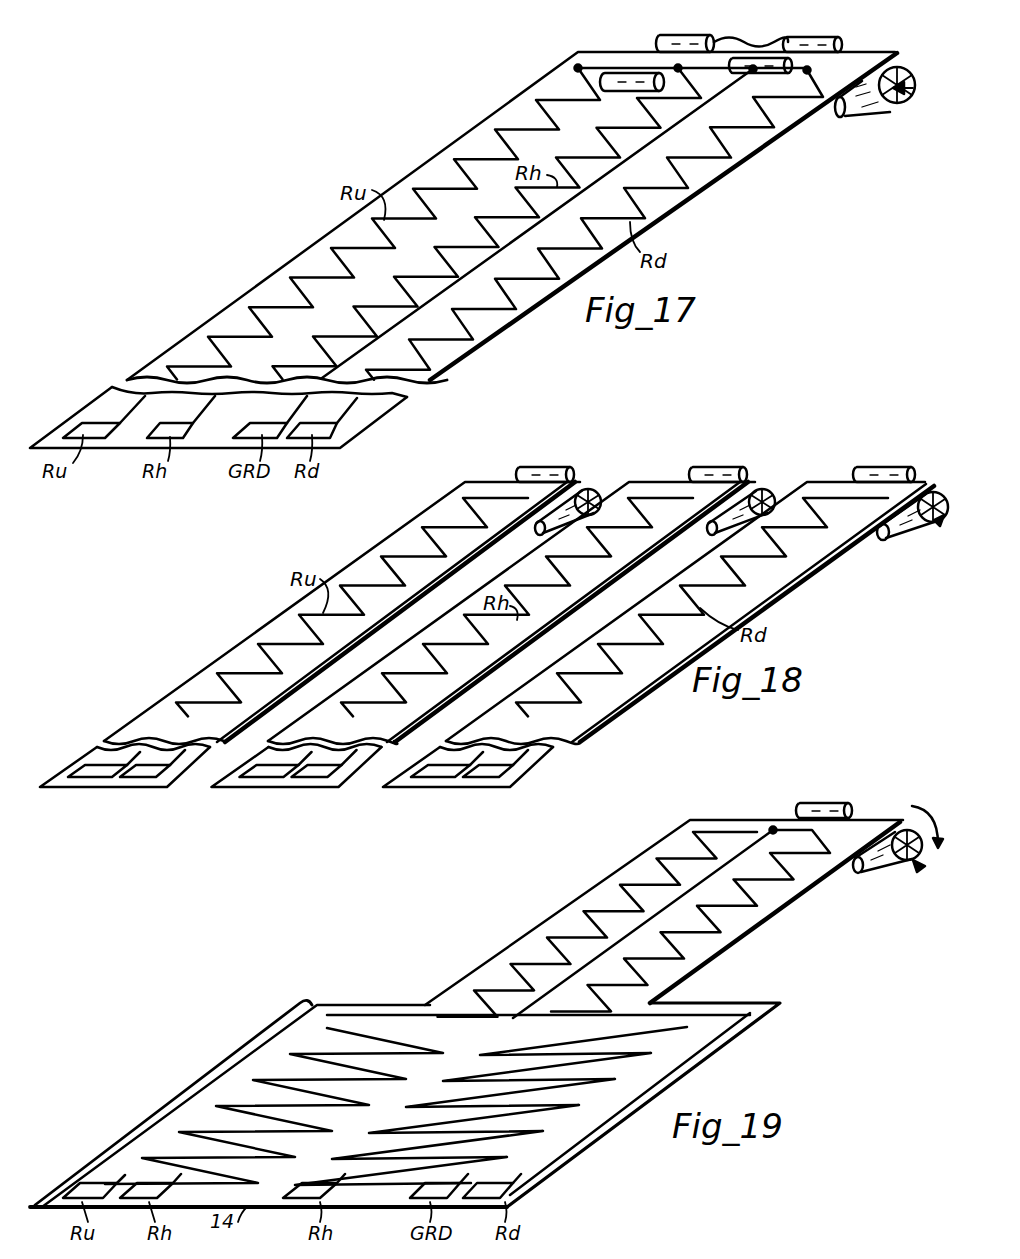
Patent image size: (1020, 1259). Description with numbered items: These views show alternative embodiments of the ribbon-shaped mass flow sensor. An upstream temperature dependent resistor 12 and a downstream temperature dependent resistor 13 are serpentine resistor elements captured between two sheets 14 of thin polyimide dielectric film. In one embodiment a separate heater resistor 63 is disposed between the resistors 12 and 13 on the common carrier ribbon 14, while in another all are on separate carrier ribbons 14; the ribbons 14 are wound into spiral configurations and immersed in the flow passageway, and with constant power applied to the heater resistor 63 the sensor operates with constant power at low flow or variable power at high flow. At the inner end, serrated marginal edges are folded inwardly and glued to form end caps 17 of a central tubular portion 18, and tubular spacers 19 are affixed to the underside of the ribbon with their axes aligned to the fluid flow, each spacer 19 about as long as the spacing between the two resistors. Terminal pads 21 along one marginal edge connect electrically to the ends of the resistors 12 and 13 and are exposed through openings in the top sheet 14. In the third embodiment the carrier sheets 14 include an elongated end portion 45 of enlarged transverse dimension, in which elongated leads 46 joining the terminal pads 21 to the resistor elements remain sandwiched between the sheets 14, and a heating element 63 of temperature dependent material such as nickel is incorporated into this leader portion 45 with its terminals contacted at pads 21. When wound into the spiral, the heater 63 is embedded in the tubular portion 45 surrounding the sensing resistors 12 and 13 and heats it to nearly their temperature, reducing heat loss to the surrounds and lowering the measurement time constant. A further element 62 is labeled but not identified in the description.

In FIG. 18, the upstream temperature dependent resistor 12 is at (407, 550).
In FIG. 19, the upstream temperature dependent resistor 12 is at (610, 907).
In FIG. 18, the downstream temperature dependent resistor 13 is at (779, 541).
In FIG. 19, the downstream temperature dependent resistor 13 is at (740, 912).
In FIG. 17, the sheets of thin film dielectric material 14 is at (340, 234).
In FIG. 18, the sheets of thin film dielectric material 14 is at (203, 688).
In FIG. 19, the sheets of thin film dielectric material 14 is at (532, 929).
In FIG. 17, the end caps 17 is at (912, 100).
In FIG. 18, the end caps 17 is at (943, 534).
In FIG. 19, the end caps 17 is at (916, 872).
In FIG. 17, the central tubular portion 18 is at (908, 61).
In FIG. 18, the central tubular portion 18 is at (585, 487).
In FIG. 19, the central tubular portion 18 is at (905, 810).
In FIG. 17, the tubular spacers 19 is at (744, 42).
In FIG. 18, the tubular spacers 19 is at (550, 453).
In FIG. 19, the tubular spacers 19 is at (847, 802).
In FIG. 17, the terminal pads 21 is at (110, 422).
In FIG. 18, the terminal pads 21 is at (107, 773).
In FIG. 19, the terminal pads 21 is at (110, 1198).
In FIG. 19, the elongated end portion 45 is at (167, 1102).
In FIG. 19, the leads 46 is at (333, 1018).
In FIG. 17, the heater resistor element 62 is at (511, 216).
In FIG. 18, the heater resistor element 62 is at (620, 504).
In FIG. 19, the heater resistor 63 is at (397, 1042).